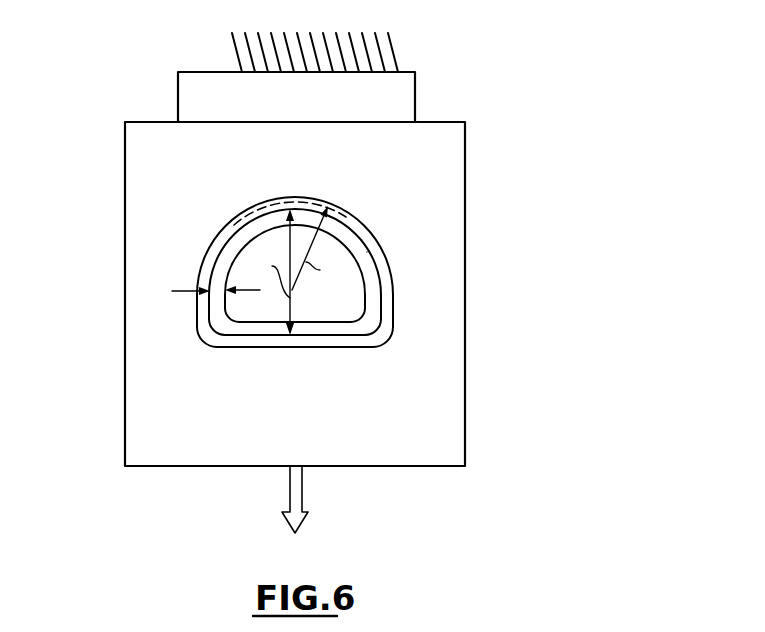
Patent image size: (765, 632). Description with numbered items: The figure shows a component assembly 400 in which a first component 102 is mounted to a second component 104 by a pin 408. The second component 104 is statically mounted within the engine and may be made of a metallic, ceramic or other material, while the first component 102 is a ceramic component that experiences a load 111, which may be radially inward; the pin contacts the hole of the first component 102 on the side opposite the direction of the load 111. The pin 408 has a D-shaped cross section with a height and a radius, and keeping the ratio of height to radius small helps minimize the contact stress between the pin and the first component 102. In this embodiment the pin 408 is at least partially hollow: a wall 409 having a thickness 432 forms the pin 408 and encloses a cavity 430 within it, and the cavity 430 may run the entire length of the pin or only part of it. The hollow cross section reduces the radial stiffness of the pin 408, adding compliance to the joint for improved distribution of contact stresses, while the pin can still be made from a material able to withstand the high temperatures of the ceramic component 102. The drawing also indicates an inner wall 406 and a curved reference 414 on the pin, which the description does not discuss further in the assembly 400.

The component assembly 400 is at (350, 294).
The first component 102 is at (455, 143).
The second component 104 is at (400, 93).
The load 111 is at (305, 522).
The inner wall 406 is at (393, 297).
The pin 408 is at (370, 272).
The wall 409 is at (367, 252).
The curved surface 414 is at (317, 205).
The cavity 430 is at (340, 297).
The thickness 432 is at (183, 292).